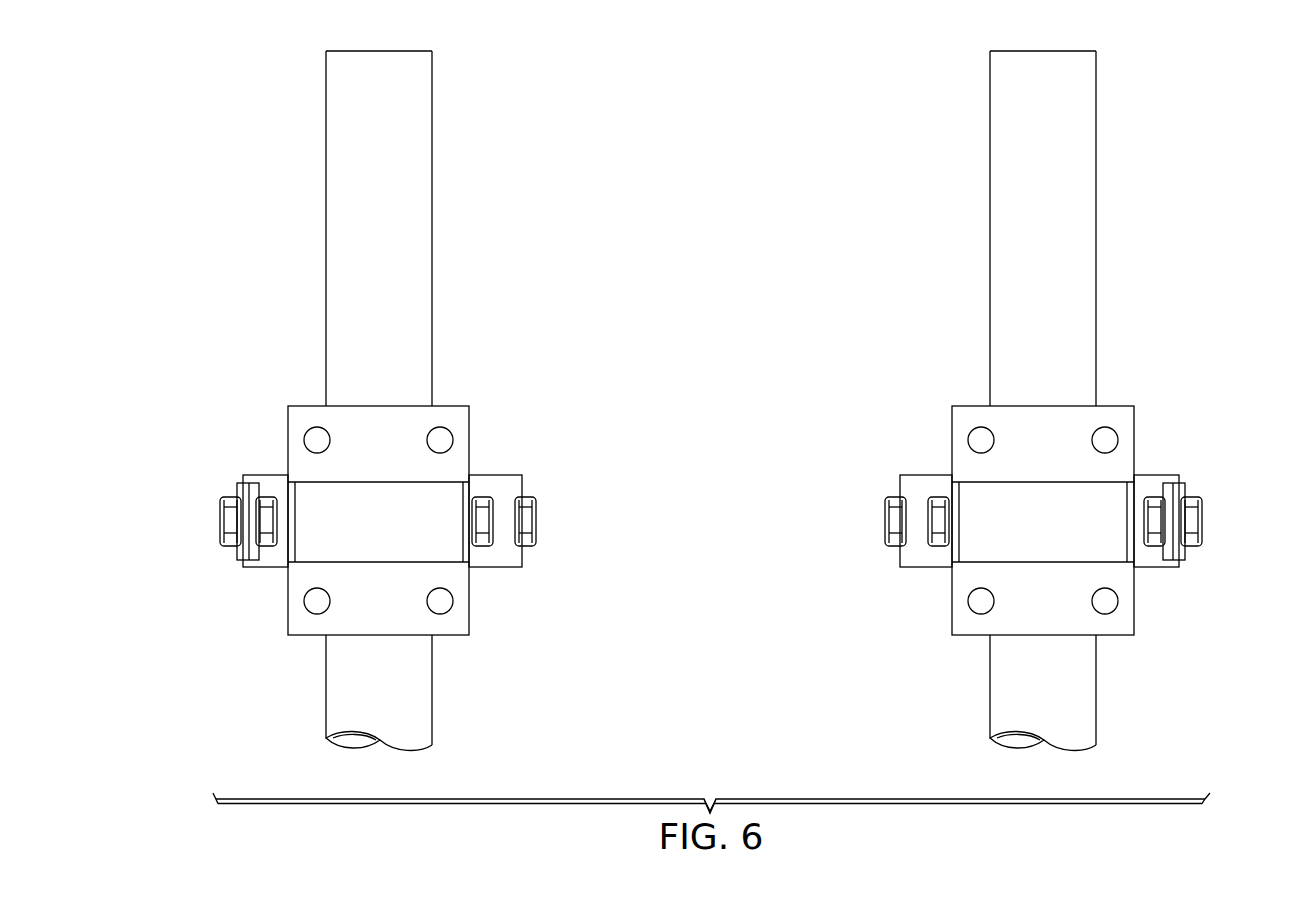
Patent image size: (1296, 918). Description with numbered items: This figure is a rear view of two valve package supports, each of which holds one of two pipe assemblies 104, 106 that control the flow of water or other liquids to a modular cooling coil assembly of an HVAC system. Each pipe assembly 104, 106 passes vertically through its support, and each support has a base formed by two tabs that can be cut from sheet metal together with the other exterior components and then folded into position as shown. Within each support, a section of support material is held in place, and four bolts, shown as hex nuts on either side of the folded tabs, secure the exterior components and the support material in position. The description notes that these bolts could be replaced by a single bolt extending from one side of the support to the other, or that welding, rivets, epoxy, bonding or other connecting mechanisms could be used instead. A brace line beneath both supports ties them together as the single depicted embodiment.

The pipe assembly 104 is at (1096, 228).
The pipe assembly 106 is at (326, 228).